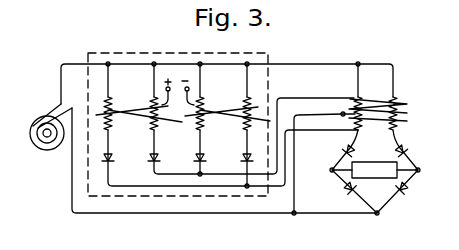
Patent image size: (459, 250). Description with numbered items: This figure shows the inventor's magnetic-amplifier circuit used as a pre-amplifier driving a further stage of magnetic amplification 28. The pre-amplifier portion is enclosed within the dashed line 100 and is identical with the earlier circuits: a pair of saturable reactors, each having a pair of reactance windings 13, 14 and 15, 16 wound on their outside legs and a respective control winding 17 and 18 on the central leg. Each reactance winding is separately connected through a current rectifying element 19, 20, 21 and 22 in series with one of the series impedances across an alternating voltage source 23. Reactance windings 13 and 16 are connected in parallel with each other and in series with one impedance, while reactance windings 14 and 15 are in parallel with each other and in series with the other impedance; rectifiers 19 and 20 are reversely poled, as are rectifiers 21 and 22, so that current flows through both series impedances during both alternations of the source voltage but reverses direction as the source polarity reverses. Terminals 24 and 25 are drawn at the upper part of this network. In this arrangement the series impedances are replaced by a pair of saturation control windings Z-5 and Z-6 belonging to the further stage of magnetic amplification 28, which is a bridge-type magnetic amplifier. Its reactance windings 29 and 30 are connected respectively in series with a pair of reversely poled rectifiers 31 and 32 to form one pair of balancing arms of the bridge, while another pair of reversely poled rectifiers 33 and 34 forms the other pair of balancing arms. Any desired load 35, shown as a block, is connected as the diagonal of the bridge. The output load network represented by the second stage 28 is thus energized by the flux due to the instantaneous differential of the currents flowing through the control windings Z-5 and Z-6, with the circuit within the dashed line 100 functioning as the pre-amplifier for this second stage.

The dashed line 100 is at (87, 56).
The reactance winding 13 is at (107, 98).
The reactance winding 14 is at (153, 98).
The reactance winding 15 is at (201, 98).
The reactance winding 16 is at (247, 98).
The control winding 17 is at (134, 116).
The control winding 18 is at (223, 117).
The current rectifying element 19 is at (103, 165).
The current rectifying element 20 is at (146, 165).
The current rectifying element 21 is at (191, 163).
The current rectifying element 22 is at (237, 163).
The alternating voltage source 23 is at (28, 132).
The positive terminal 24 is at (166, 86).
The negative terminal 25 is at (187, 86).
The further stage of magnetic amplification 28 is at (404, 164).
The reactance winding 29 is at (355, 100).
The reactance winding 30 is at (395, 100).
The rectifier 31 is at (343, 152).
The rectifier 32 is at (403, 150).
The rectifier 33 is at (350, 192).
The rectifier 34 is at (401, 194).
The load 35 is at (360, 180).
The saturation control winding Z-5 is at (380, 95).
The saturation control winding Z-6 is at (376, 129).